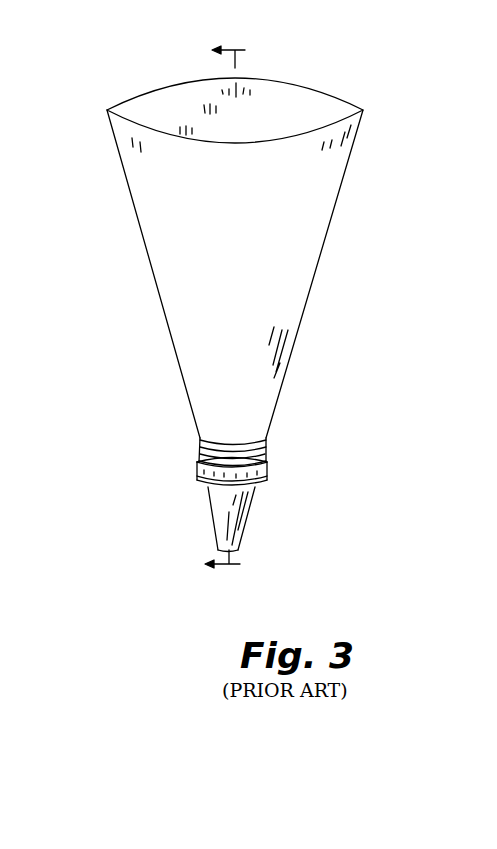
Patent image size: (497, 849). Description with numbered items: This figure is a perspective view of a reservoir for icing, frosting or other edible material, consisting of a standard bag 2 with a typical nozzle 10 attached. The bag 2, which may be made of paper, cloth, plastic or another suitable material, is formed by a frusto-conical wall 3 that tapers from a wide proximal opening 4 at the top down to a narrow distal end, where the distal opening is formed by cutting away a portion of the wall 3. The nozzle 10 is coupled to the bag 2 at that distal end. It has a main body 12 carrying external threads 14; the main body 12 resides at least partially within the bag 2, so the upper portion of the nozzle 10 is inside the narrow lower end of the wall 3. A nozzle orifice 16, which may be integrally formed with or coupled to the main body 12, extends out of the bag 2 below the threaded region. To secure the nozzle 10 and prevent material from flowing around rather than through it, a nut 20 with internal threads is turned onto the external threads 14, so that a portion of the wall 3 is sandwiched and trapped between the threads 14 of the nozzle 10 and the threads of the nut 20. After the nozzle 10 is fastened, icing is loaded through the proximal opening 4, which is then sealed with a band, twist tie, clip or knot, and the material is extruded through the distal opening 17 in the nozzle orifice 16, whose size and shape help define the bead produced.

The bag 2 is at (355, 235).
The frusto-conical wall 3 is at (192, 303).
The proximal opening 4 is at (295, 105).
The nozzle 10 is at (232, 519).
The main body 12 is at (221, 438).
The external threads 14 is at (261, 447).
The nozzle orifice 16 is at (222, 505).
The distal opening 17 is at (240, 545).
The nut 20 is at (265, 475).